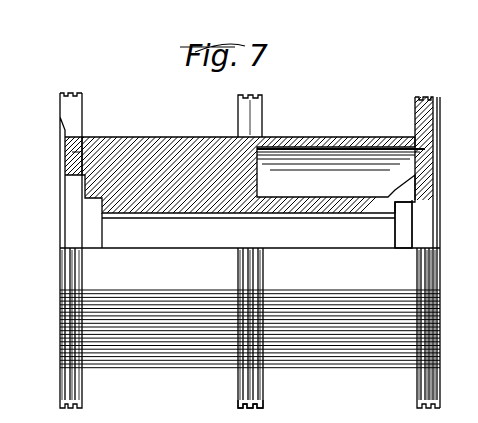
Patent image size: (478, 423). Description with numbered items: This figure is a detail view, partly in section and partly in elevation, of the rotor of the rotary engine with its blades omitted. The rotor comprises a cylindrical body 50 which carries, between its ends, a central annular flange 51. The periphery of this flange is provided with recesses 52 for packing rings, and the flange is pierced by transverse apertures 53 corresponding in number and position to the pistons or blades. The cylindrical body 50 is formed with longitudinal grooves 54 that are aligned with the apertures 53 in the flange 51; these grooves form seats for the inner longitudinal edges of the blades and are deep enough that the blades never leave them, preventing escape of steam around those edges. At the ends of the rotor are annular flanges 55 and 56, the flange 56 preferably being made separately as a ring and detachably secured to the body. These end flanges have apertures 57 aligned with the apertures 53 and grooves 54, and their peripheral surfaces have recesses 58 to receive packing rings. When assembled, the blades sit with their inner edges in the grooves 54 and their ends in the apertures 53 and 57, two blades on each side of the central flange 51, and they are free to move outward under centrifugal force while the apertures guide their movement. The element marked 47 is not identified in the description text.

The coil winding 47 is at (186, 368).
The cylindrical body 50 is at (390, 368).
The annular flange 51 is at (262, 101).
The peripheral recesses 52 is at (244, 408).
The transverse apertures 53 is at (256, 112).
The grooves 54 is at (182, 138).
The annular flange 55 is at (441, 395).
The annular flange 56 is at (59, 392).
The apertures 57 is at (83, 118).
The recesses 58 is at (76, 93).